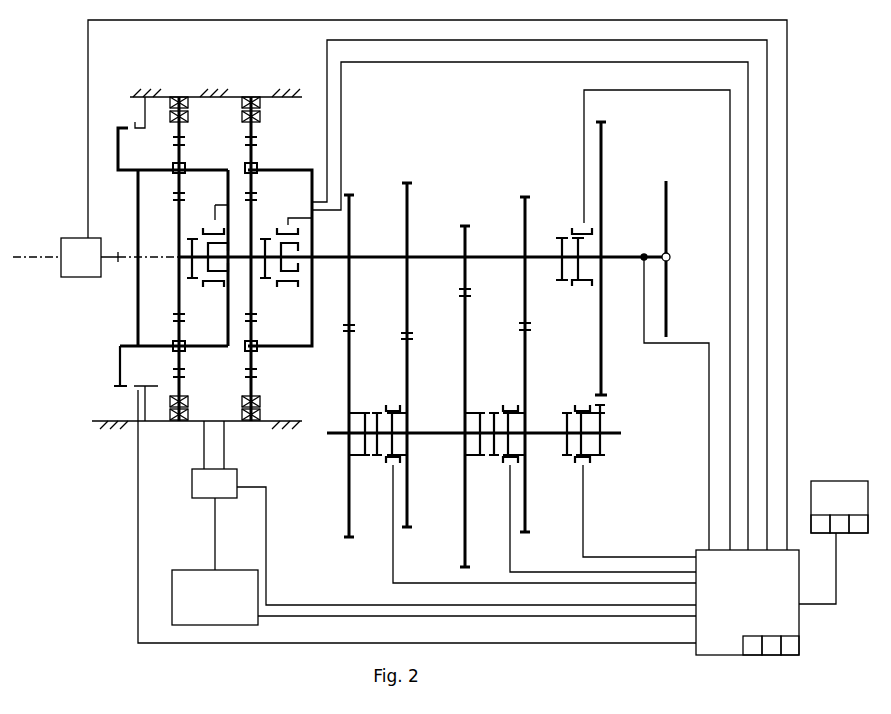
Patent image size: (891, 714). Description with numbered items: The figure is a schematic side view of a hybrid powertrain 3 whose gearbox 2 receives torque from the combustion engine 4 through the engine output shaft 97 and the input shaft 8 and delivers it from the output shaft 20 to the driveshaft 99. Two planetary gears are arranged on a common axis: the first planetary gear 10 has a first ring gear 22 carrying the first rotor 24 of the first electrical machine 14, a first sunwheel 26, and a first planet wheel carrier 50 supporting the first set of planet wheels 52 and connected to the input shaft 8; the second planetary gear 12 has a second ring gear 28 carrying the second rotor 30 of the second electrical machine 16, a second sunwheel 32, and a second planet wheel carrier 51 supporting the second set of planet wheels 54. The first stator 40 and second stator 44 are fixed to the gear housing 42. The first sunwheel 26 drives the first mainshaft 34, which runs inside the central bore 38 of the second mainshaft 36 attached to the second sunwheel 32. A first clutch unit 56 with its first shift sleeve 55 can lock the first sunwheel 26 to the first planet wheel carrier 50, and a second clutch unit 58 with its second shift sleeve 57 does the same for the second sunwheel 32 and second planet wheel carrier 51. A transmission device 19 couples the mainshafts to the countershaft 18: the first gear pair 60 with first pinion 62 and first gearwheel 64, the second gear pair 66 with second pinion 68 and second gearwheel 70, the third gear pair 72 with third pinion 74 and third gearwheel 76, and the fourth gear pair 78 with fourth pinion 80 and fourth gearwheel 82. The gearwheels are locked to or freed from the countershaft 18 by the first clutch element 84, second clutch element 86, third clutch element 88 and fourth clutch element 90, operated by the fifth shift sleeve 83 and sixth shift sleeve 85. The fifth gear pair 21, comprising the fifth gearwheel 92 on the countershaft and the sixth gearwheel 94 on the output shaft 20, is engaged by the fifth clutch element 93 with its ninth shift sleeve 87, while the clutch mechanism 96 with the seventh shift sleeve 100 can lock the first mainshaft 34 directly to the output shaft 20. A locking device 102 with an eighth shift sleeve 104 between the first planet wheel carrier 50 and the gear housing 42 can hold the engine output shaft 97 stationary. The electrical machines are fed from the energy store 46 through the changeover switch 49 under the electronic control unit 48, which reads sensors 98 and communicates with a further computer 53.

The gearbox 2 is at (797, 78).
The hybrid powertrain 3 is at (128, 488).
The combustion engine 4 is at (68, 238).
The input shaft 8 is at (128, 245).
The first planetary gear 10 is at (78, 138).
The second planetary gear 12 is at (343, 128).
The first electrical machine 14 is at (78, 82).
The second electrical machine 16 is at (298, 113).
The countershaft 18 is at (452, 444).
The transmission device 19 is at (462, 139).
The output shaft 20 is at (624, 240).
The fifth gear pair 21 is at (626, 394).
The first ring gear 22 is at (173, 133).
The first rotor 24 is at (180, 104).
The first sunwheel 26 is at (178, 280).
The second ring gear 28 is at (257, 140).
The second rotor 30 is at (252, 104).
The second sunwheel 32 is at (268, 236).
The first mainshaft 34 is at (498, 246).
The second mainshaft 36 is at (340, 268).
The central bore 38 is at (424, 246).
The first stator 40 is at (166, 98).
The gear housing 42 is at (240, 98).
The second stator 44 is at (256, 98).
The energy store 46 is at (240, 570).
The electronic control unit 48 is at (700, 550).
The changeover switch 49 is at (200, 500).
The first planet wheel carrier 50 is at (150, 176).
The second planet wheel carrier 51 is at (334, 318).
The first set of planet wheels 52 is at (184, 178).
The computer 53 is at (852, 481).
The second set of planet wheels 54 is at (258, 178).
The first shift sleeve 55 is at (214, 288).
The first clutch unit 56 is at (192, 240).
The second shift sleeve 57 is at (288, 288).
The second clutch unit 58 is at (296, 232).
The first gear pair 60 is at (466, 212).
The first pinion 62 is at (468, 286).
The first gearwheel 64 is at (468, 336).
The second gear pair 66 is at (408, 166).
The second pinion 68 is at (412, 294).
The second gearwheel 70 is at (412, 366).
The third gear pair 72 is at (527, 180).
The third pinion 74 is at (528, 284).
The third gearwheel 76 is at (528, 376).
The fourth gear pair 78 is at (350, 178).
The fourth pinion 80 is at (352, 292).
The fourth gearwheel 82 is at (352, 384).
The fifth shift sleeve 83 is at (510, 406).
The first clutch element 84 is at (508, 466).
The sixth shift sleeve 85 is at (394, 406).
The second clutch element 86 is at (398, 464).
The ninth shift sleeve 87 is at (582, 404).
The third clutch element 88 is at (582, 466).
The fourth clutch element 90 is at (356, 470).
The fifth gearwheel 92 is at (606, 410).
The fifth clutch element 93 is at (604, 456).
The sixth gearwheel 94 is at (604, 338).
The clutch mechanism 96 is at (562, 232).
The engine output shaft 97 is at (112, 272).
The sensors 98 is at (646, 250).
The driveshaft 99 is at (670, 236).
The seventh shift sleeve 100 is at (586, 290).
The locking device 102 is at (120, 393).
The eighth shift sleeve 104 is at (135, 396).